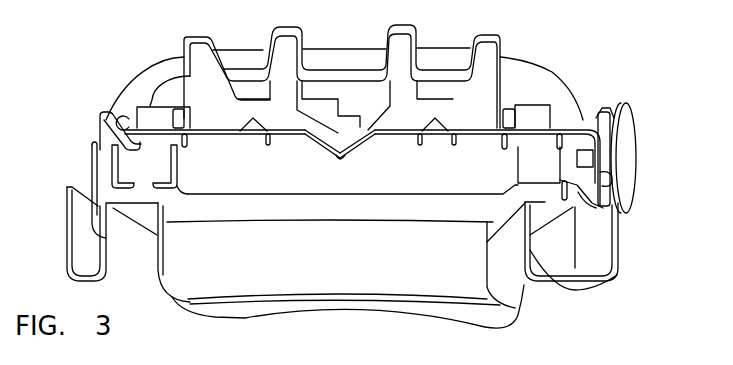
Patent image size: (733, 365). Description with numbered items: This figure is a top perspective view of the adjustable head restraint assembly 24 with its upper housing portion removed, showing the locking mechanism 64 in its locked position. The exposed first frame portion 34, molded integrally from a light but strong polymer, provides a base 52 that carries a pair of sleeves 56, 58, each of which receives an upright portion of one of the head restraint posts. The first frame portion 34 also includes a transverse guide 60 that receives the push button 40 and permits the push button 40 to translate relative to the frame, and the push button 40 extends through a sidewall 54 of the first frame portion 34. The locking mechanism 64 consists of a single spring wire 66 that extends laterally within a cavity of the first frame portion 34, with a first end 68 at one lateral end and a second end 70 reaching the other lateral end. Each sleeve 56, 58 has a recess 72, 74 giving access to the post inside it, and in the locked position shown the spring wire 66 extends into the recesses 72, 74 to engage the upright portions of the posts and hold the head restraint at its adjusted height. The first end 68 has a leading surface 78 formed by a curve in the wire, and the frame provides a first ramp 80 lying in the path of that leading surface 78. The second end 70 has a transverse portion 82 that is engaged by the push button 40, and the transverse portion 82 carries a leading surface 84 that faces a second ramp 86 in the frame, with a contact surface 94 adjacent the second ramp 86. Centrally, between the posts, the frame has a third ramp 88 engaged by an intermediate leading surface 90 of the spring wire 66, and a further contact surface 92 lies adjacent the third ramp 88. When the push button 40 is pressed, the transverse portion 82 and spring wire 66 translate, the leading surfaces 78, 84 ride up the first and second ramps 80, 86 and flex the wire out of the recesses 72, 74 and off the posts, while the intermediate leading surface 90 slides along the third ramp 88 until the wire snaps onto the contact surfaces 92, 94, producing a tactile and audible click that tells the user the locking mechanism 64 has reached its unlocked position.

The connector assembly 24 is at (576, 45).
The first frame portion 34 is at (536, 64).
The push button 40 is at (604, 153).
The base 52 is at (427, 186).
The sidewall 54 is at (620, 250).
The sleeve 56 is at (122, 165).
The sleeve 58 is at (527, 175).
The transverse guide 60 is at (627, 178).
The locking mechanism 64 is at (537, 101).
The spring wire 66 is at (463, 128).
The first end 68 is at (132, 80).
The second end 70 is at (586, 118).
The recess 72 is at (177, 107).
The recess 74 is at (512, 108).
The leading surface 78 is at (107, 120).
The first ramp 80 is at (111, 115).
The transverse portion 82 is at (611, 113).
The leading surface 84 is at (580, 213).
The second ramp 86 is at (620, 158).
The third ramp 88 is at (362, 140).
The leading surface 90 is at (339, 158).
The contact surface 92 is at (325, 138).
The contact surface 94 is at (580, 190).